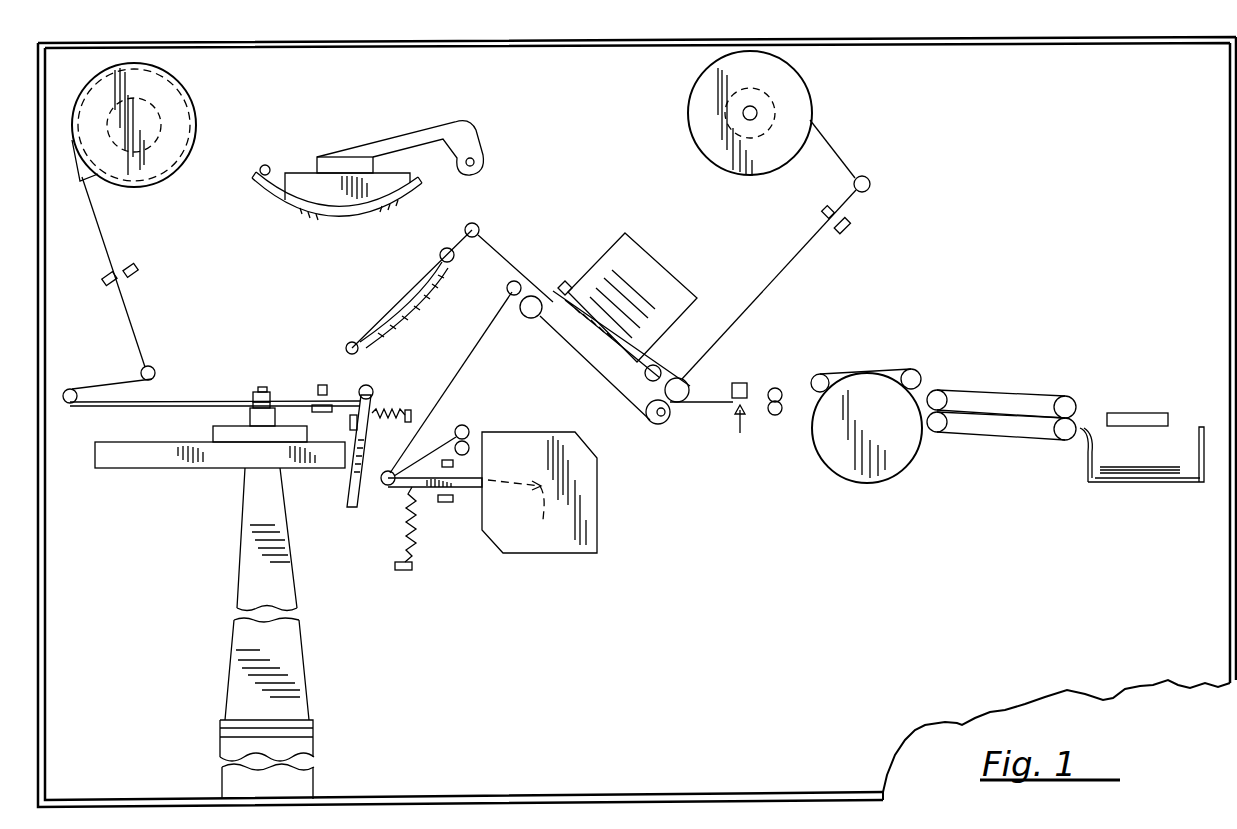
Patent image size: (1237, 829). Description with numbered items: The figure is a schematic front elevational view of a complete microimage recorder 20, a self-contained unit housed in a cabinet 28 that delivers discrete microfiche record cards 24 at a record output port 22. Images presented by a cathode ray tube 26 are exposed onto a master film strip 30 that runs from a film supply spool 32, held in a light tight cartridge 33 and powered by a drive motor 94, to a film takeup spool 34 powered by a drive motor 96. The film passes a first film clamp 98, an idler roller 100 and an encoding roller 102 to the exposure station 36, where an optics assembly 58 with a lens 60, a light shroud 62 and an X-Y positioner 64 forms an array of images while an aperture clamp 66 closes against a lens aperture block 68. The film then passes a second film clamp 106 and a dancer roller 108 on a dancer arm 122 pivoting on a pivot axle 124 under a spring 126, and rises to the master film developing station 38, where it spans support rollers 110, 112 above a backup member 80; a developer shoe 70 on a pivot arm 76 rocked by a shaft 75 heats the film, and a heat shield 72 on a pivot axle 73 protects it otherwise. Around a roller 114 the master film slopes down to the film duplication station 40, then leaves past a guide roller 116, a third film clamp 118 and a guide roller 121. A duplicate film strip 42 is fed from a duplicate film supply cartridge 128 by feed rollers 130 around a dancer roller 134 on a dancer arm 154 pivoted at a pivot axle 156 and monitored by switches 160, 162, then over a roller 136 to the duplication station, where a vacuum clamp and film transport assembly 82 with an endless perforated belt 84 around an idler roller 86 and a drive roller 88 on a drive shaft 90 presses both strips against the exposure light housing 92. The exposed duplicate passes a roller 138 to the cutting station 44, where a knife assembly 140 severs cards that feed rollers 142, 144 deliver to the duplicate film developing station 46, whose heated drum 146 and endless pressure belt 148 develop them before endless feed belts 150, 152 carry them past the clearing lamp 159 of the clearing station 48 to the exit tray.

The microimage recorder 20 is at (903, 31).
The record output port 22 is at (1200, 477).
The microfiche record cards 24 is at (1093, 470).
The cathode ray tube 26 is at (302, 742).
The cabinet 28 is at (648, 793).
The master film strip 30 is at (134, 310).
The film supply spool 32 is at (178, 77).
The light tight cartridge 33 is at (128, 186).
The film takeup spool 34 is at (805, 87).
The exposure station 36 is at (245, 325).
The master film developing station 38 is at (511, 186).
The film duplication station 40 is at (596, 215).
The duplicate film strip 42 is at (460, 360).
The cutting station 44 is at (765, 343).
The duplicate film developing station 46 is at (921, 333).
The clearing station 48 is at (1128, 371).
The optics assembly 58 is at (217, 522).
The lens 60 is at (250, 420).
The light shroud 62 is at (237, 585).
The X-Y positioner 64 is at (170, 456).
The aperture clamp 66 is at (257, 392).
The lens aperture block 68 is at (269, 401).
The developer shoe 70 is at (305, 182).
The heat shield 72 is at (370, 213).
The pivot axle 73 is at (265, 168).
The shaft 75 is at (483, 152).
The pivot arm 76 is at (408, 138).
The backup member 80 is at (430, 290).
The vacuum clamp and film transport assembly 82 is at (550, 317).
The endless perforated belt 84 is at (593, 373).
The idler roller 86 is at (525, 312).
The drive roller 88 is at (647, 420).
The drive shaft 90 is at (660, 422).
The exposure light housing 92 is at (660, 272).
The drive motor 94 is at (171, 160).
The drive motor 96 is at (720, 103).
The first film clamp 98 is at (103, 275).
The idler roller 100 is at (141, 370).
The encoding roller 102 is at (72, 403).
The second film clamp 106 is at (322, 385).
The dancer roller 108 is at (370, 390).
The support roller 110 is at (358, 349).
The support roller 112 is at (452, 255).
The roller 114 is at (478, 227).
The guide roller 116 is at (657, 367).
The third film clamp 118 is at (822, 210).
The guide roller 121 is at (870, 183).
The dancer arm 122 is at (350, 487).
The pivot axle 124 is at (360, 508).
The spring 126 is at (388, 412).
The duplicate film supply cartridge 128 is at (597, 528).
The feed rollers 130 is at (465, 428).
The dancer roller 134 is at (400, 470).
The roller 136 is at (508, 285).
The roller 138 is at (680, 387).
The knife assembly 140 is at (738, 433).
The feed roller 142 is at (775, 388).
The feed roller 144 is at (775, 415).
The heated drum 146 is at (918, 450).
The endless pressure belt 148 is at (850, 372).
The endless feed belt 150 is at (992, 392).
The endless feed belt 152 is at (1013, 437).
The dancer arm 154 is at (470, 487).
The pivot axle 156 is at (545, 508).
The clearing lamp 159 is at (1150, 413).
The switch 160 is at (455, 462).
The switch 162 is at (445, 502).